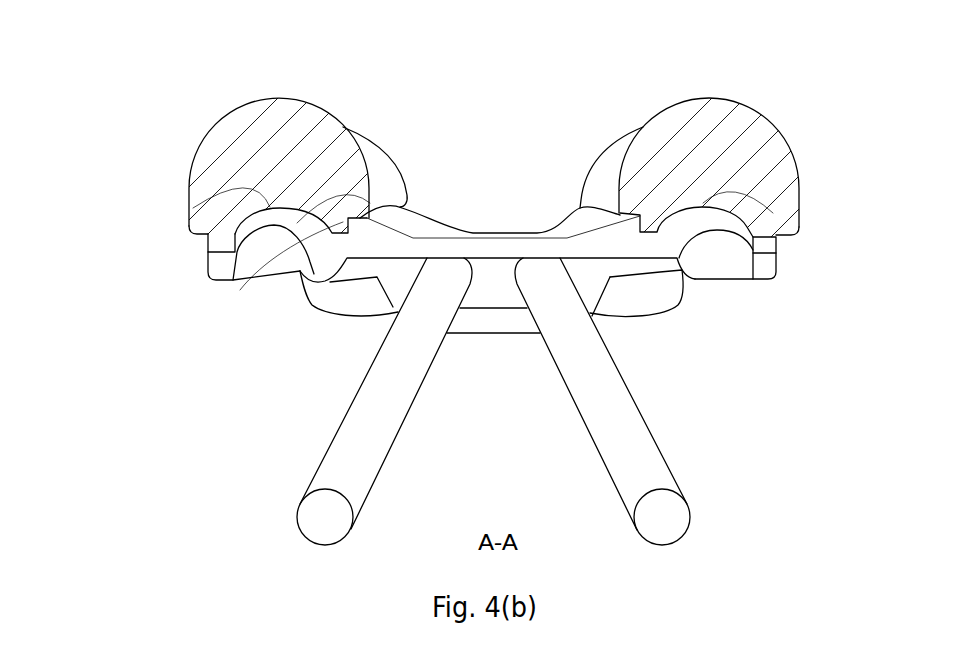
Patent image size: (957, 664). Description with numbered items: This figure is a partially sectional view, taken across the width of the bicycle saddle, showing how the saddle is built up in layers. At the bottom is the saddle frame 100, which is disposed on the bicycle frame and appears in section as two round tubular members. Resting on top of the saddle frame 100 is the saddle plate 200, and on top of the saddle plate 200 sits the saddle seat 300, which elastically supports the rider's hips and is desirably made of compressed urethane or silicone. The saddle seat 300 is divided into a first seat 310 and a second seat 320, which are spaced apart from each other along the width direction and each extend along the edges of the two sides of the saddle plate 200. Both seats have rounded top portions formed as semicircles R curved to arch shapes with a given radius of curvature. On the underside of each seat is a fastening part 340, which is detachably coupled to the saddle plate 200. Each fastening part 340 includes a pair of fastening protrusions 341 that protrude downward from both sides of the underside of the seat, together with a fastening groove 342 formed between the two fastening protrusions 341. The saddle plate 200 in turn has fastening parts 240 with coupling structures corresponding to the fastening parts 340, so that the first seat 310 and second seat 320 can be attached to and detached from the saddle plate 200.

The saddle frame 100 is at (656, 448).
The saddle plate 200 is at (685, 276).
The fastening part 240 is at (760, 280).
The saddle seat 300 is at (760, 73).
The first seat 310 is at (295, 98).
The second seat 320 is at (705, 98).
The fastening part 340 is at (107, 203).
The fastening protrusion 341 is at (207, 250).
The fastening groove 342 is at (188, 214).
The semicircle R is at (220, 120).